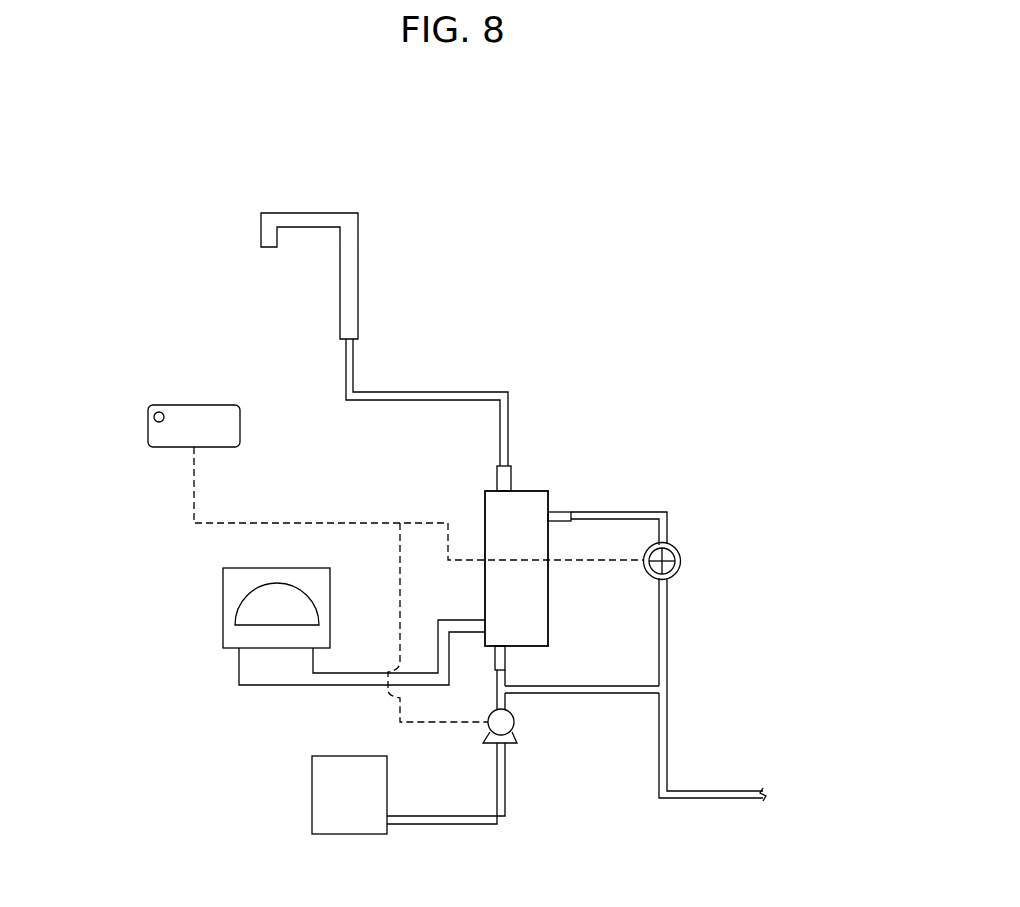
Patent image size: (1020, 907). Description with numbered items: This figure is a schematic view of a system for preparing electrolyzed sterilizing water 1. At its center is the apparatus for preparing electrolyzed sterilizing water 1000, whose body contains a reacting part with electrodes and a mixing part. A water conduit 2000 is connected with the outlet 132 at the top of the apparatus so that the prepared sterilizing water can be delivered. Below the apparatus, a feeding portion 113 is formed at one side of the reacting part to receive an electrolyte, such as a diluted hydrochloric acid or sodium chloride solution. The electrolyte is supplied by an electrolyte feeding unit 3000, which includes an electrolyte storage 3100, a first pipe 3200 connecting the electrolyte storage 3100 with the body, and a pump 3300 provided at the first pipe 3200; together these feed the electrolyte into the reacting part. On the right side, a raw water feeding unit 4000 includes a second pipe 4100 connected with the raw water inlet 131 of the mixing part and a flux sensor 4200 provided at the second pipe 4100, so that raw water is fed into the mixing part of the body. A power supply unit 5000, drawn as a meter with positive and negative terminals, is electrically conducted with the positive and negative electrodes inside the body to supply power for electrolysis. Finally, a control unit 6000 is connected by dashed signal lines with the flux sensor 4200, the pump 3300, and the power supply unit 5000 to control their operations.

The system for preparing electrolyzed sterilizing water 1 is at (613, 232).
The apparatus for preparing electrolyzed sterilizing water 1000 is at (540, 478).
The feeding portion 113 is at (505, 655).
The raw water inlet 131 is at (560, 512).
The outlet 132 is at (497, 478).
The water conduit 2000 is at (385, 368).
The electrolyte feeding unit 3000 is at (640, 800).
The electrolyte storage 3100 is at (387, 834).
The first pipe 3200 is at (505, 812).
The pump 3300 is at (513, 728).
The raw water feeding unit 4000 is at (802, 533).
The second pipe 4100 is at (667, 620).
The flux sensor 4200 is at (683, 555).
The power supply unit 5000 is at (223, 592).
The control unit 6000 is at (147, 388).